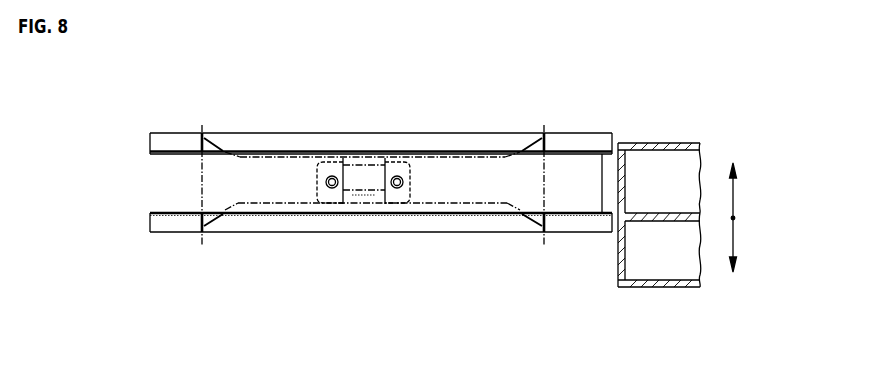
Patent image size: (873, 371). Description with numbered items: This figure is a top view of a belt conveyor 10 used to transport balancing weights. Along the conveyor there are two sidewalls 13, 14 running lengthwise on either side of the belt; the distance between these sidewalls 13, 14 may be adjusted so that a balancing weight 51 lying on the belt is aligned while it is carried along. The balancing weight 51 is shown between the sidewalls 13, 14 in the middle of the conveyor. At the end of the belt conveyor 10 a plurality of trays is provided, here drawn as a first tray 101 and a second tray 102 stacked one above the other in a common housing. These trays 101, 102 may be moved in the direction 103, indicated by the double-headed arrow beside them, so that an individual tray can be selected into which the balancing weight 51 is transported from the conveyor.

The belt conveyor 10 is at (170, 183).
The sidewall 13 is at (287, 150).
The sidewall 14 is at (287, 234).
The balancing weight 51 is at (397, 170).
The tray 101 is at (663, 163).
The tray 102 is at (662, 270).
The direction 103 is at (736, 218).